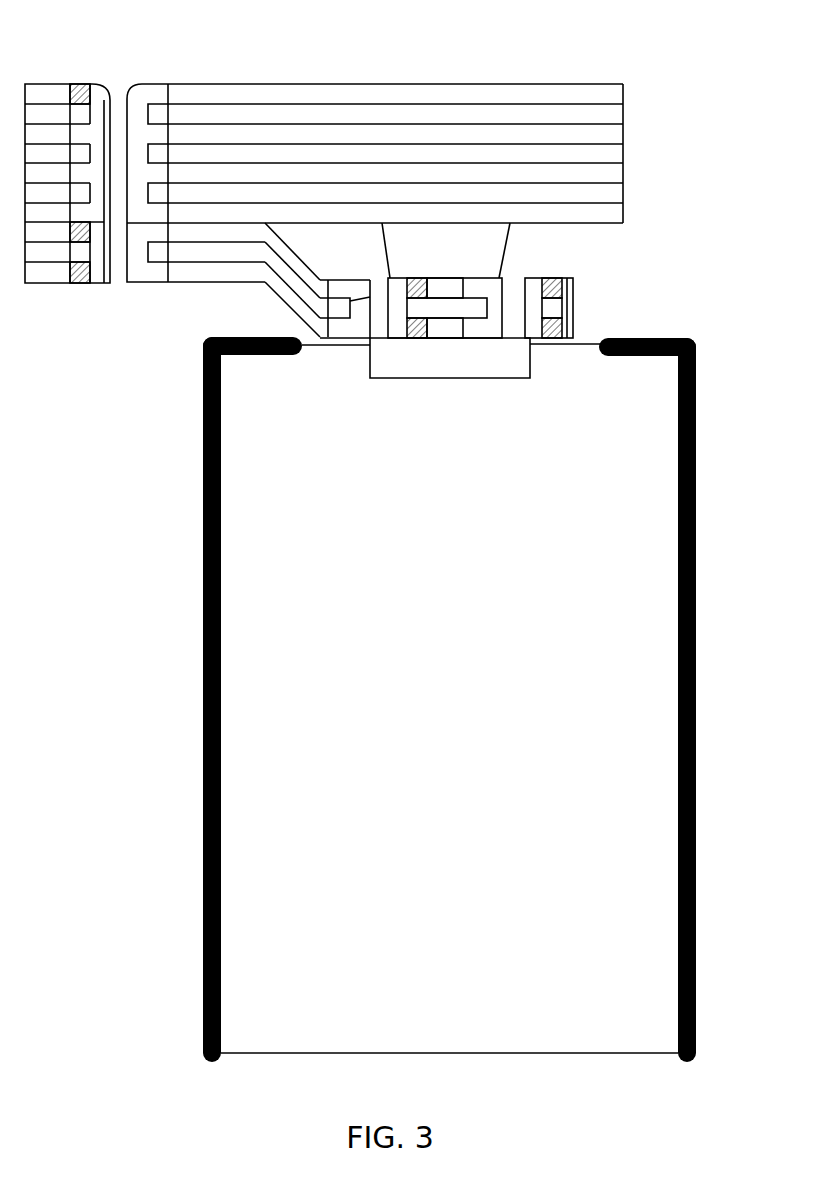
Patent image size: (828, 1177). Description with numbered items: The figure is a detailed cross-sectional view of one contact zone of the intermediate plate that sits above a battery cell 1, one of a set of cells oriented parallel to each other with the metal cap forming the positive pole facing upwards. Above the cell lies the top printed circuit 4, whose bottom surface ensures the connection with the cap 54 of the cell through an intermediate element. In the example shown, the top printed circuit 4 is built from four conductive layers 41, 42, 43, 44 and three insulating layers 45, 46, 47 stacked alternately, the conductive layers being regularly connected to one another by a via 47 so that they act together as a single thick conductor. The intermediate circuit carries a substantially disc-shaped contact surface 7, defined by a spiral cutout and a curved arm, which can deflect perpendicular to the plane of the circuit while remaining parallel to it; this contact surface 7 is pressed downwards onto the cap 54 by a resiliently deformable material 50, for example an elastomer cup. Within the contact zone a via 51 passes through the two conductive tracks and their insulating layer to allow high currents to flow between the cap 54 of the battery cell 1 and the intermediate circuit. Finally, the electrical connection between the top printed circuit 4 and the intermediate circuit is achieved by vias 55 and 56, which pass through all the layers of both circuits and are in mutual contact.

The battery cell 1 is at (292, 647).
The top printed circuit 4 is at (455, 196).
The contact surface 7 is at (490, 288).
The conductive layer 41 is at (408, 175).
The conductive layer 42 is at (623, 123).
The conductive layer 43 is at (623, 162).
The conductive layer 44 is at (623, 206).
The insulating layer 45 is at (623, 101).
The insulating layer 46 is at (623, 142).
The insulating layer 47 is at (623, 185).
The resiliently deformable material 50 is at (476, 250).
The via 51 is at (323, 313).
The cap 54 is at (503, 358).
The via 55 is at (85, 273).
The via 56 is at (88, 95).